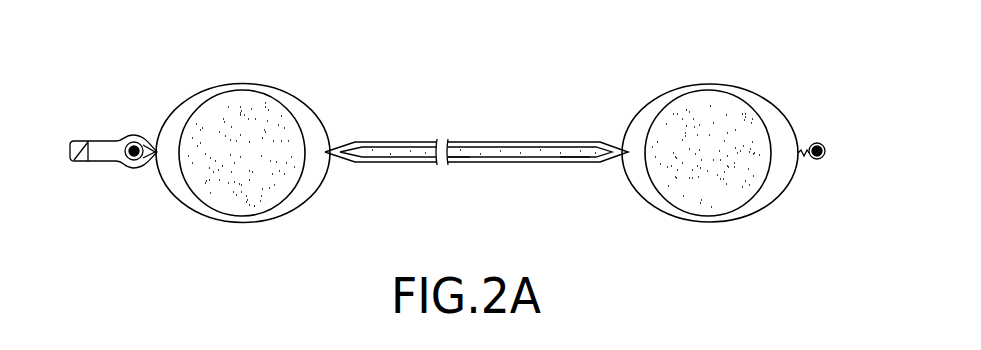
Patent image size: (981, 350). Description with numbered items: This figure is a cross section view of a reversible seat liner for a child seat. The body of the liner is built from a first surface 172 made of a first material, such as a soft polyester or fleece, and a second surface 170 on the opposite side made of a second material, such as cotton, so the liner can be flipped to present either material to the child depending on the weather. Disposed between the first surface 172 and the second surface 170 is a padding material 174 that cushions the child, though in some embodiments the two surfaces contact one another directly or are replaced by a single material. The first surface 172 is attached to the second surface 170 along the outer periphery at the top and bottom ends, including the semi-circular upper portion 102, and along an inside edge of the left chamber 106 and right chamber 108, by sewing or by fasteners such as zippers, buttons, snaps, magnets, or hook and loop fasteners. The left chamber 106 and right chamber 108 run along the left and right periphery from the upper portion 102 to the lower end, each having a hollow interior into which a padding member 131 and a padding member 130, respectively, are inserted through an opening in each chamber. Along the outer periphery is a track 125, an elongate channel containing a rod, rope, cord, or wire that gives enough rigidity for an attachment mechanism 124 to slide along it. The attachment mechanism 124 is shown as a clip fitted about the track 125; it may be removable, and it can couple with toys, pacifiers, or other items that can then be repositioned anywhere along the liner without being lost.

The upper portion 102 is at (402, 162).
The left chamber 106 is at (205, 89).
The right chamber 108 is at (742, 88).
The attachment mechanism 124 is at (99, 150).
The track 125 is at (825, 147).
The padding member 130 is at (753, 200).
The padding member 131 is at (199, 191).
The second surface 170 is at (500, 158).
The first surface 172 is at (510, 143).
The padding material 174 is at (568, 158).